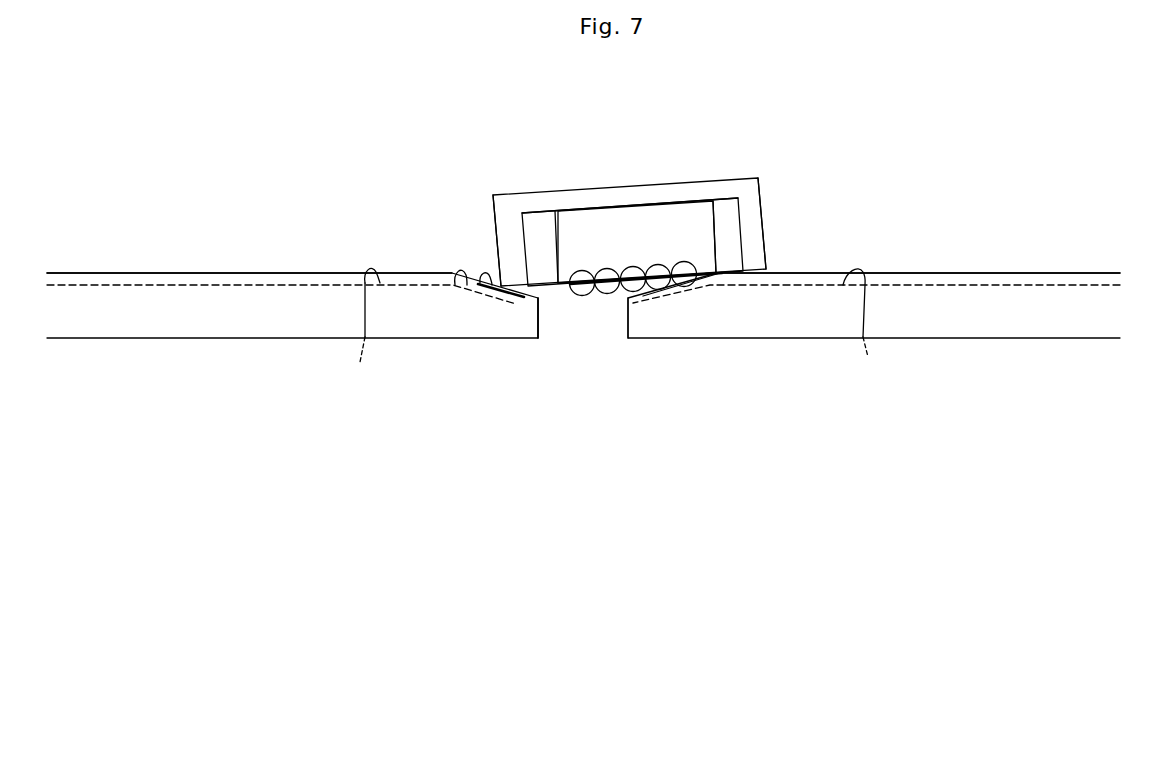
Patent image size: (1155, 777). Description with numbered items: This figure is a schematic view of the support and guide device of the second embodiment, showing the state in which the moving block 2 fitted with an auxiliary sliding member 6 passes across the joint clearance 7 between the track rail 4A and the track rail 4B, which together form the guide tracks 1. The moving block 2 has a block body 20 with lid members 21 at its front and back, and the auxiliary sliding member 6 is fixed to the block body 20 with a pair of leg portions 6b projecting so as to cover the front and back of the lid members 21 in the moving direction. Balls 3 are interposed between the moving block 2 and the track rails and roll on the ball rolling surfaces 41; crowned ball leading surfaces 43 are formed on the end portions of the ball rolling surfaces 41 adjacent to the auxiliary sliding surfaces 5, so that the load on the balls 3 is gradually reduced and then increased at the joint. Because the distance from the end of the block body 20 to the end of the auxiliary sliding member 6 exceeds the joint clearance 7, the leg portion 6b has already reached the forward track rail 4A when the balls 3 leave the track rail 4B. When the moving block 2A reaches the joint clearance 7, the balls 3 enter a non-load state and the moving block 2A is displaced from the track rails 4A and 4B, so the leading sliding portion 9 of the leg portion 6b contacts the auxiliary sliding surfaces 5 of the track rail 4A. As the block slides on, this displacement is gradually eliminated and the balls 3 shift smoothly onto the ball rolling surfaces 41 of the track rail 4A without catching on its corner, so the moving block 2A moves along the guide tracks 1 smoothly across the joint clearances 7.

The guide track 1 is at (155, 230).
The track rail 4A is at (253, 272).
The track rail 4B is at (992, 272).
The ball rolling surface 41 is at (615, 326).
The ball leading surface 43 is at (455, 285).
The auxiliary sliding surface 5 is at (487, 289).
The leading sliding portion 9 is at (522, 300).
The joint clearance 7 is at (580, 323).
The auxiliary sliding member 6 is at (723, 177).
The leg portion 6b is at (510, 247).
The moving block 2 is at (492, 176).
The moving block 2A is at (657, 200).
The lid member 21 is at (533, 220).
The block body 20 is at (595, 227).
The ball 3 is at (685, 278).